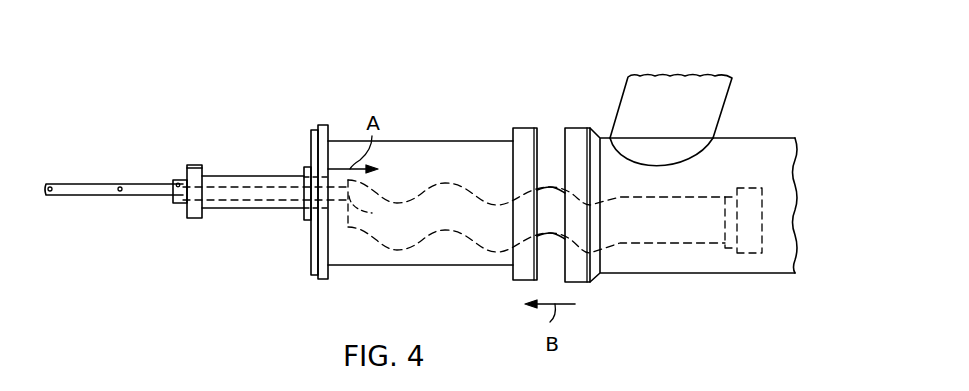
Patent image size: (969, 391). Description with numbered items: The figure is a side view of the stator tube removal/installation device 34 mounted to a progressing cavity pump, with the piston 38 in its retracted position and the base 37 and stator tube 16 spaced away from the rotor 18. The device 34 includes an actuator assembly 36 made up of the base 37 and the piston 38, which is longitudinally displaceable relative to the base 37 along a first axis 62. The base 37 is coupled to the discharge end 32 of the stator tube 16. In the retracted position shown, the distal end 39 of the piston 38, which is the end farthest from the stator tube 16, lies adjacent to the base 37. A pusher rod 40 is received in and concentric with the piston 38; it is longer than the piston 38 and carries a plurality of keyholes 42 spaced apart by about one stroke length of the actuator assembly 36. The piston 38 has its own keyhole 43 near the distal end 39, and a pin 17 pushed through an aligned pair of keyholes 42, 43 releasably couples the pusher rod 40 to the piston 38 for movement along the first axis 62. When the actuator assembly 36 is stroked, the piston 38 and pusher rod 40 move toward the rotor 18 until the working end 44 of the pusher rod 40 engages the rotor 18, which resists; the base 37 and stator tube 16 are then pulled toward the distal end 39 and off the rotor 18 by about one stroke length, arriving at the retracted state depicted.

The stator tube 16 is at (433, 141).
The pin 17 is at (177, 184).
The rotor 18 is at (549, 186).
The discharge end 32 is at (317, 112).
The stator tube removal/installation device 34 is at (280, 150).
The actuator assembly 36 is at (250, 176).
The base 37 is at (248, 209).
The piston 38 is at (189, 218).
The distal end 39 is at (177, 205).
The pusher rod 40 is at (80, 197).
The keyholes 42 is at (52, 187).
The keyhole 43 is at (189, 172).
The working end 44 is at (536, 216).
The first axis 62 is at (127, 196).